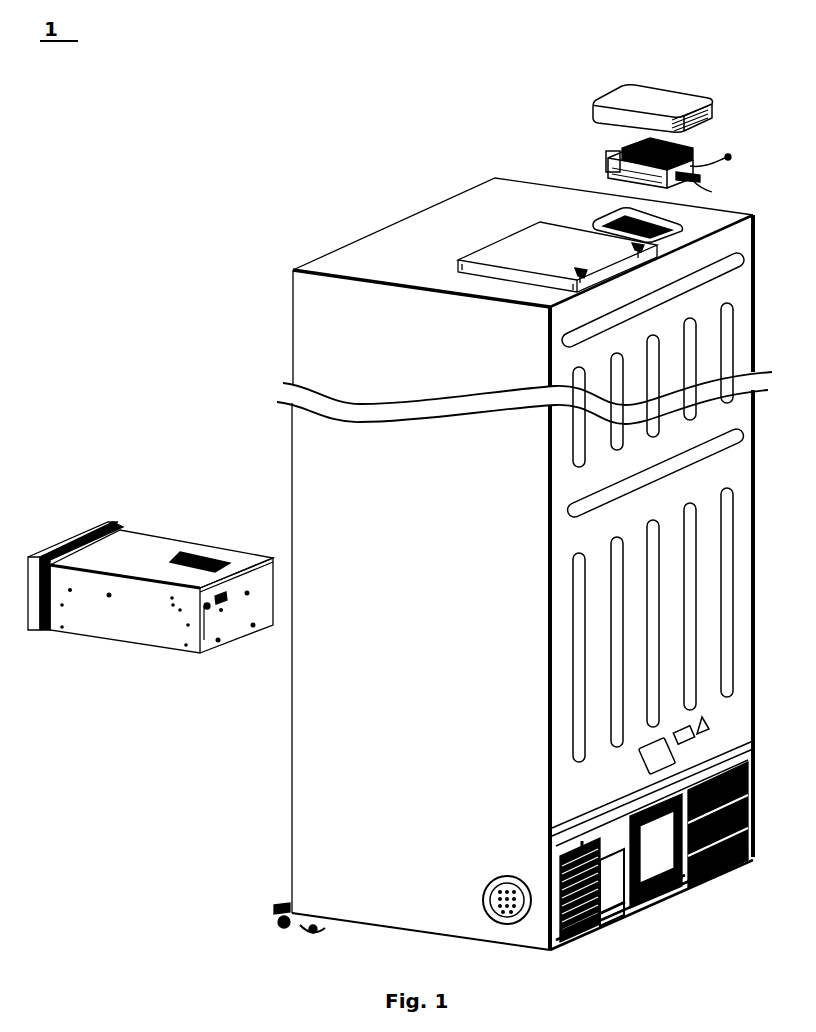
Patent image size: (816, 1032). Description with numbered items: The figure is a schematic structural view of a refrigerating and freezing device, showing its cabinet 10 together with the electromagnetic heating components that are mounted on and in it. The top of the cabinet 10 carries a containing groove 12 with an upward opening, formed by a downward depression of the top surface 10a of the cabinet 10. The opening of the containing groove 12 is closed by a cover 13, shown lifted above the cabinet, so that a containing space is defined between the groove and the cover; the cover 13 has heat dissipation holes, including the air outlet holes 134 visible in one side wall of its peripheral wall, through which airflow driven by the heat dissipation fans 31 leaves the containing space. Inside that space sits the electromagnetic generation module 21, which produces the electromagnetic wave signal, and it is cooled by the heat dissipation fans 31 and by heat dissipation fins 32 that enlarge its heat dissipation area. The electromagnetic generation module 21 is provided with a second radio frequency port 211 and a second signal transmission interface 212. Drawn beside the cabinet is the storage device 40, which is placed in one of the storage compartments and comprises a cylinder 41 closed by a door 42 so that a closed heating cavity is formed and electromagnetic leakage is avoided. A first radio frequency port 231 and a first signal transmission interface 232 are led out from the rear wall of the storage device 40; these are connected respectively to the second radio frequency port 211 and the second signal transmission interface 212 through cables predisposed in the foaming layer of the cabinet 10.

The cabinet 10 is at (284, 282).
The top surface 10a is at (441, 222).
The containing groove 12 is at (613, 228).
The cover 13 is at (622, 96).
The air outlet holes 134 is at (705, 112).
The heat dissipation fans 31 is at (608, 152).
The heat dissipation fins 32 is at (690, 148).
The electromagnetic generation module 21 is at (625, 173).
The second radio frequency port 211 is at (736, 158).
The second signal transmission interface 212 is at (702, 178).
The storage device 40 is at (130, 514).
The cylinder 41 is at (134, 626).
The door 42 is at (37, 622).
The first radio frequency port 231 is at (226, 604).
The first signal transmission interface 232 is at (210, 640).